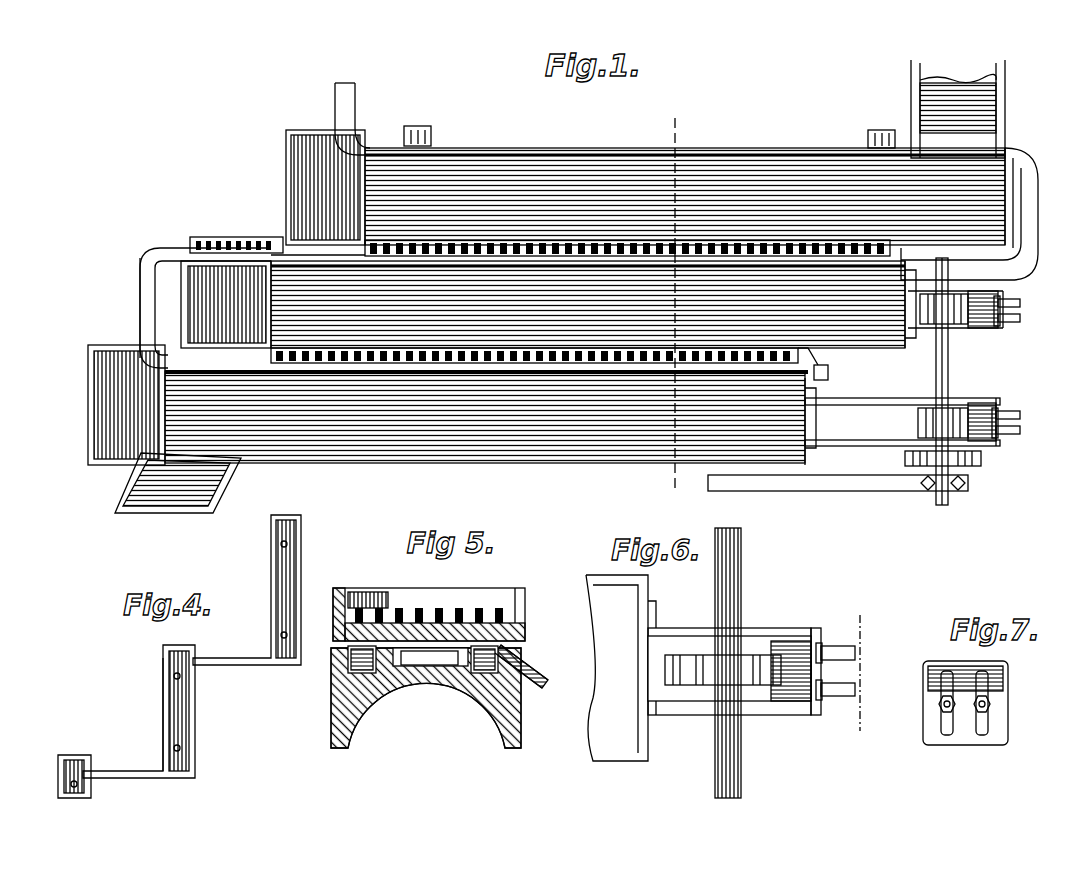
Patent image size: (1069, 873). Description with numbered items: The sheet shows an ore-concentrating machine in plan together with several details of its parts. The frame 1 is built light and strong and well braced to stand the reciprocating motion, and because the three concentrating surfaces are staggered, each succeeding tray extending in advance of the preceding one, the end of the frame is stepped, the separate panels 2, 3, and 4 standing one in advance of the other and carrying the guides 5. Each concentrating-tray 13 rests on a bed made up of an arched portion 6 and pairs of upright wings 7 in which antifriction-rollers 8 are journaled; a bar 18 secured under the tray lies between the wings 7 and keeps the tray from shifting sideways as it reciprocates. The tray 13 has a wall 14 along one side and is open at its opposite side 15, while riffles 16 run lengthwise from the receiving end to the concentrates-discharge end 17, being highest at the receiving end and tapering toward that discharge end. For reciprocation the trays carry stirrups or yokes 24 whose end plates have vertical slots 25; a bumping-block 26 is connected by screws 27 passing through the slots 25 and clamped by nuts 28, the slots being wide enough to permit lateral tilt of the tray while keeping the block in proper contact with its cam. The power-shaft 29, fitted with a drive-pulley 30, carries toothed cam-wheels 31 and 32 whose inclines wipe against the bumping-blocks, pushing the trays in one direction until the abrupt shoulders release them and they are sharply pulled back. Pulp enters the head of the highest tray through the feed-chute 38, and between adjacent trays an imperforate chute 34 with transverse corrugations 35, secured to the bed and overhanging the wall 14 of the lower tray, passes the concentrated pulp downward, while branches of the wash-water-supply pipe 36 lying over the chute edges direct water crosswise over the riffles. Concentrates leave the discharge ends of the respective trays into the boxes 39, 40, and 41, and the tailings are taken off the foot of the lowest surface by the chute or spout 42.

In FIG. 1, the frame 1 is at (418, 128).
In FIG. 4, the frame 1 is at (182, 715).
In FIG. 1, the panel 2 is at (265, 186).
In FIG. 4, the panel 2 is at (263, 556).
In FIG. 1, the panel 3 is at (632, 118).
In FIG. 4, the panel 3 is at (157, 680).
In FIG. 4, the panel 4 is at (50, 760).
In FIG. 4, the guides 5 is at (290, 520).
In FIG. 5, the arched portion 6 is at (392, 660).
In FIG. 5, the upright wings 7 is at (325, 660).
In FIG. 6, the upright wings 7 is at (875, 620).
In FIG. 5, the antifriction-rollers 8 is at (350, 663).
In FIG. 1, the concentrating-tray 13 is at (1005, 157).
In FIG. 5, the concentrating-tray 13 is at (429, 598).
In FIG. 6, the concentrating-tray 13 is at (640, 745).
In FIG. 5, the wall 14 is at (325, 600).
In FIG. 6, the wall 14 is at (595, 577).
In FIG. 1, the open side 15 is at (812, 350).
In FIG. 5, the open side 15 is at (512, 590).
In FIG. 1, the riffles 16 is at (575, 175).
In FIG. 5, the riffles 16 is at (375, 600).
In FIG. 1, the concentrates-discharge end 17 is at (345, 203).
In FIG. 5, the bar 18 is at (423, 657).
In FIG. 1, the stirrups or yokes 24 is at (975, 320).
In FIG. 6, the stirrups or yokes 24 is at (760, 705).
In FIG. 7, the vertical slots 25 is at (935, 675).
In FIG. 1, the bumping-block 26 is at (990, 290).
In FIG. 6, the bumping-block 26 is at (778, 635).
In FIG. 1, the screws 27 is at (1013, 295).
In FIG. 6, the screws 27 is at (847, 647).
In FIG. 7, the screws 27 is at (947, 702).
In FIG. 1, the nuts 28 is at (1005, 310).
In FIG. 6, the nuts 28 is at (812, 635).
In FIG. 7, the nuts 28 is at (939, 688).
In FIG. 1, the power-shaft 29 is at (942, 373).
In FIG. 6, the power-shaft 29 is at (735, 575).
In FIG. 1, the drive-pulley 30 is at (975, 452).
In FIG. 1, the toothed cam-wheel 31 is at (910, 413).
In FIG. 6, the toothed cam-wheel 31 is at (673, 647).
In FIG. 1, the toothed cam-wheel 32 is at (948, 320).
In FIG. 1, the chutes or inclines 34 is at (775, 232).
In FIG. 5, the chutes or inclines 34 is at (520, 655).
In FIG. 1, the transverse corrugations 35 is at (450, 232).
In FIG. 5, the transverse corrugations 35 is at (537, 670).
In FIG. 1, the wash-water-supply pipe 36 is at (162, 240).
In FIG. 1, the feed-chute 38 is at (993, 102).
In FIG. 1, the box 39 is at (278, 155).
In FIG. 1, the box 40 is at (140, 277).
In FIG. 1, the box 41 is at (80, 380).
In FIG. 1, the chute or spout 42 is at (110, 497).